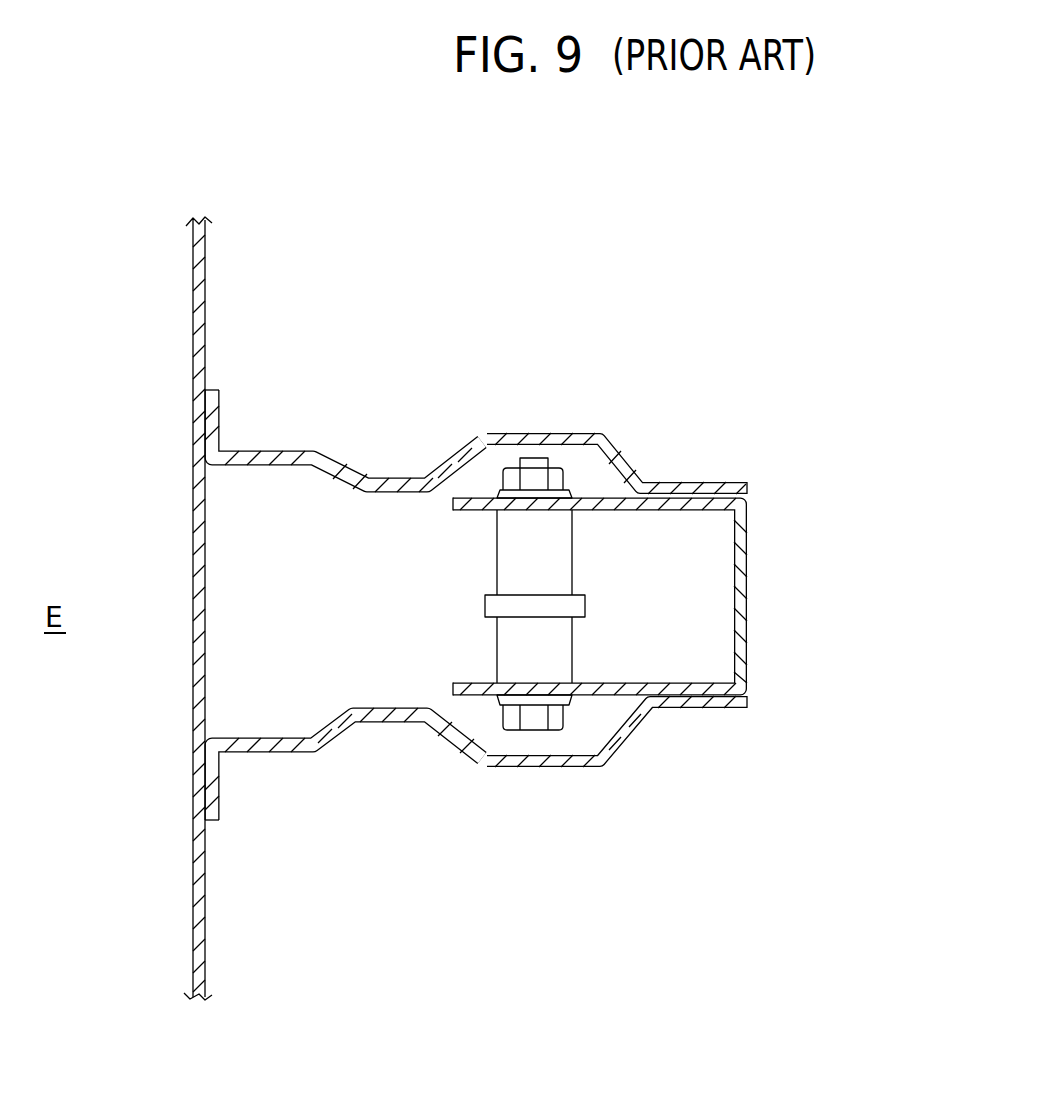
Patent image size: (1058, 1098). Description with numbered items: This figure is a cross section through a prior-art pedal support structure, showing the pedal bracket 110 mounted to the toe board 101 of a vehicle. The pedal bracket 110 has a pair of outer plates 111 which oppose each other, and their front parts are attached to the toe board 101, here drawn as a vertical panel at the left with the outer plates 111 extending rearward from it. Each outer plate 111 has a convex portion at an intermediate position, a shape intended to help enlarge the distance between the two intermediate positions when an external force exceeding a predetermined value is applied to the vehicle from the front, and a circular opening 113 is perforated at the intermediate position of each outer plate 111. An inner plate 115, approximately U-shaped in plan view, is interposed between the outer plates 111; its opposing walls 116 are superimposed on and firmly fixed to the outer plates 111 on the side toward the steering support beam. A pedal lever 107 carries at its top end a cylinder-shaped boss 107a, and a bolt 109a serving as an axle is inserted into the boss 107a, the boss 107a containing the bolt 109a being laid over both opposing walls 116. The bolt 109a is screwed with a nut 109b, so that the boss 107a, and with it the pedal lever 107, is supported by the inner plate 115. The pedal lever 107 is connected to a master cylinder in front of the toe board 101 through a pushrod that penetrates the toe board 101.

The toe board 101 is at (194, 270).
The pedal lever 107 is at (485, 603).
The boss 107a is at (497, 652).
The bolt 109a is at (567, 720).
The nut 109b is at (500, 480).
The pedal bracket 110 is at (445, 318).
The outer plates 111 is at (302, 450).
The circular opening 113 is at (537, 433).
The inner plate 115 is at (751, 617).
The opposing walls 116 is at (620, 512).